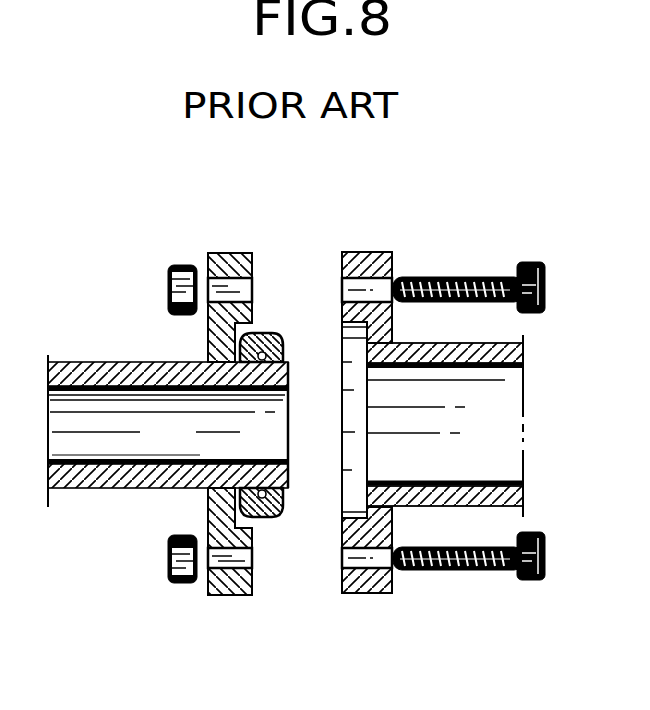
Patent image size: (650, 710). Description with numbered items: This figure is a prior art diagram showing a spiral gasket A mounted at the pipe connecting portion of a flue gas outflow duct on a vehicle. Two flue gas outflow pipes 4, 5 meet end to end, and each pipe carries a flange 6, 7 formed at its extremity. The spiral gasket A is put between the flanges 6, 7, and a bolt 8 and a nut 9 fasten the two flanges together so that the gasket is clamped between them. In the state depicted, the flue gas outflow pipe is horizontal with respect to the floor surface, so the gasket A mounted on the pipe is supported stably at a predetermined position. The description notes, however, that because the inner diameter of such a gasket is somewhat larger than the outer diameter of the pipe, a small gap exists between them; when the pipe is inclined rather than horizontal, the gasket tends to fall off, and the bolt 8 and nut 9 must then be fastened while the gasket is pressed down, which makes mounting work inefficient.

The flue gas outflow pipe 4 is at (480, 343).
The flue gas outflow pipe 5 is at (94, 378).
The flange 6 is at (366, 262).
The flange 7 is at (226, 253).
The bolt 8 is at (488, 275).
The nut 9 is at (183, 265).
The spiral gasket A is at (268, 327).